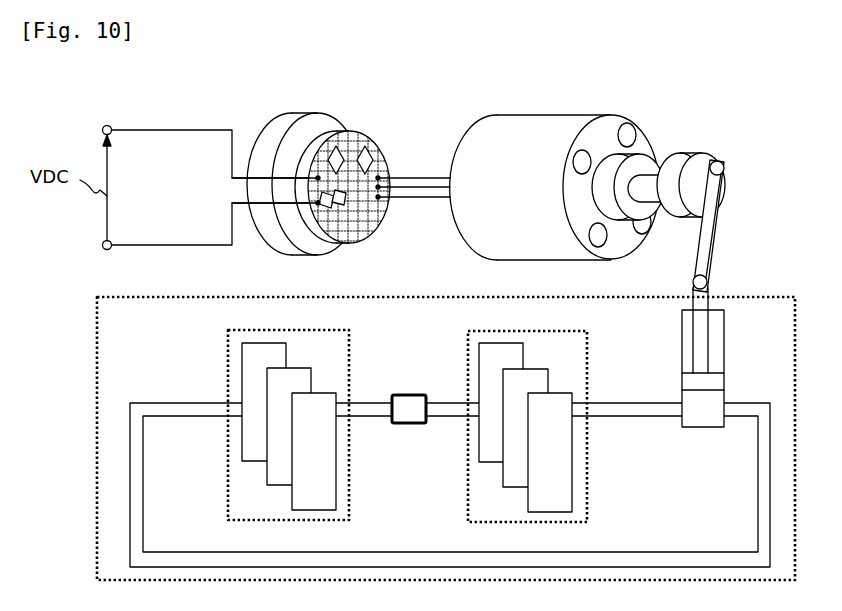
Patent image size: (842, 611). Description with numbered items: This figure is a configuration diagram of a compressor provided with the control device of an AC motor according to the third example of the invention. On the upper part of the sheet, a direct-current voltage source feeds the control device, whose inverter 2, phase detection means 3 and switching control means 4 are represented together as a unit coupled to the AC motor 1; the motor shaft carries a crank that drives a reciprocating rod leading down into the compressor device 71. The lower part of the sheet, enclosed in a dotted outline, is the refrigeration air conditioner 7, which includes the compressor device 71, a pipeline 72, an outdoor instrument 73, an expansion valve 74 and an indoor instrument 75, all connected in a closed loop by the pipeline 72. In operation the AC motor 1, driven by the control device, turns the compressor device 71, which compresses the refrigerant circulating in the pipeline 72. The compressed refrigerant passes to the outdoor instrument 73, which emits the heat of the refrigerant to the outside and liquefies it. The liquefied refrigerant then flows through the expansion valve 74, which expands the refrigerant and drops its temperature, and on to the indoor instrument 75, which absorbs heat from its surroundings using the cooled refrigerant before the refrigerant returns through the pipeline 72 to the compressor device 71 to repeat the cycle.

The AC motor 1 is at (556, 117).
The inverter 2 is at (298, 120).
The phase detection means 3 is at (322, 187).
The switching control means 4 is at (341, 187).
The refrigeration air conditioner 7 is at (401, 297).
The compressor device 71 is at (725, 366).
The pipeline 72 is at (167, 400).
The outdoor instrument 73 is at (588, 366).
The expansion valve 74 is at (410, 395).
The indoor instrument 75 is at (350, 364).